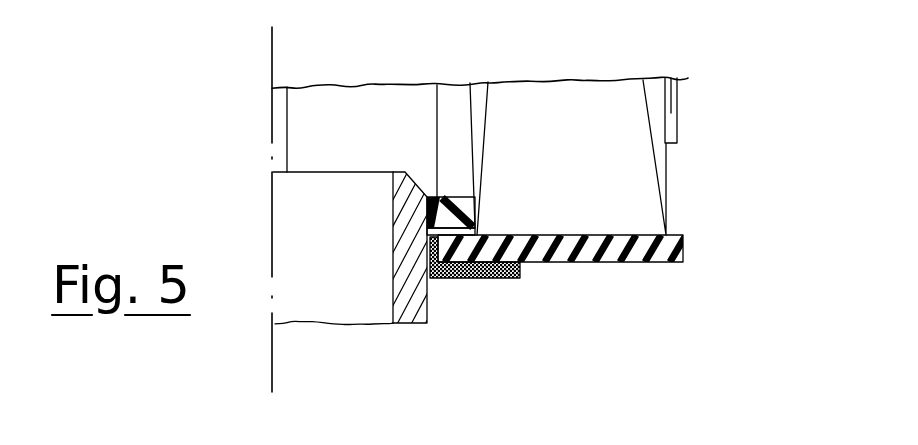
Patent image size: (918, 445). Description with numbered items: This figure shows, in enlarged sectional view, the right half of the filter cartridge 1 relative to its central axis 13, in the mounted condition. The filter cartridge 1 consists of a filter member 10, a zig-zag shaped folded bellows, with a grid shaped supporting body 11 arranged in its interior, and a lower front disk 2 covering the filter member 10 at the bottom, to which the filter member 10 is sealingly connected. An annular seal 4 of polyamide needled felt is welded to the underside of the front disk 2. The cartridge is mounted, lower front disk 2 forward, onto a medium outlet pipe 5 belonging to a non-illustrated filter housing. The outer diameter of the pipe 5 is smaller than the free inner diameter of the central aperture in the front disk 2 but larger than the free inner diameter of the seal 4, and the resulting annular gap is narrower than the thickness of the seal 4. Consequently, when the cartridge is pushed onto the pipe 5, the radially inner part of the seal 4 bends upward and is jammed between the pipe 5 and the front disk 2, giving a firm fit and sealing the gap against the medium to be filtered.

The filter cartridge 1 is at (710, 172).
The lower front disk 2 is at (700, 246).
The seal 4 is at (440, 278).
The medium outlet pipe 5 is at (396, 215).
The filter member 10 is at (578, 119).
The supporting body 11 is at (447, 133).
The central axis 13 is at (270, 58).